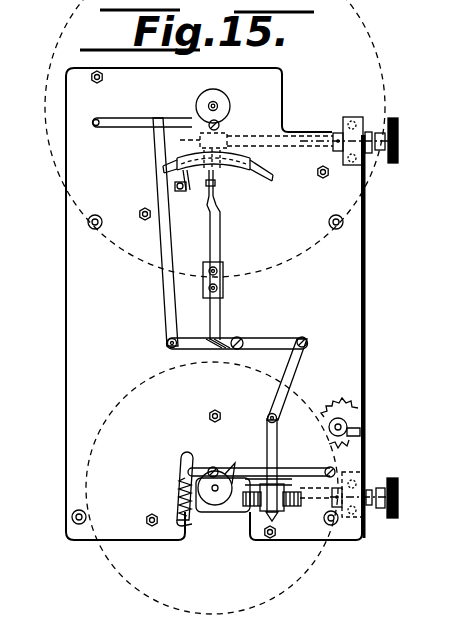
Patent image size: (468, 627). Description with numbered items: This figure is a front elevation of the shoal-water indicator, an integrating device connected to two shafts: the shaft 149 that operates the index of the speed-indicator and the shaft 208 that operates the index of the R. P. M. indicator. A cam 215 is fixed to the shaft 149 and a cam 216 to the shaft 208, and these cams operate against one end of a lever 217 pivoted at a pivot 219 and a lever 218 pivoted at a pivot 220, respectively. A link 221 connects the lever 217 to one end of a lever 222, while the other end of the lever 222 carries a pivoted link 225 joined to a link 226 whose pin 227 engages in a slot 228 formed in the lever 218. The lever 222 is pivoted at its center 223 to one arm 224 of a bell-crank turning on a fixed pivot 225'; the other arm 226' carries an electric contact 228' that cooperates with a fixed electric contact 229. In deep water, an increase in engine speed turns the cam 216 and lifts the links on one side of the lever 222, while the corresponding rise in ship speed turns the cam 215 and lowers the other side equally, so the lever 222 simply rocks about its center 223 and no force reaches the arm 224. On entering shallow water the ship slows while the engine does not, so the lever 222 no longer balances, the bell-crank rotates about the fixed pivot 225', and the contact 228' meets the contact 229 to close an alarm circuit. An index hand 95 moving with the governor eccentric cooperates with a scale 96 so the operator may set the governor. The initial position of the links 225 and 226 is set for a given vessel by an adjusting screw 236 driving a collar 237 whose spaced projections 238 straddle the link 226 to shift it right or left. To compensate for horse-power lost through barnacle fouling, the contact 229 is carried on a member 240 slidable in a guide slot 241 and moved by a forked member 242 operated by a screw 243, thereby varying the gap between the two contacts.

The index hand 95 is at (349, 414).
The scale 96 is at (361, 432).
The shaft 149 is at (220, 105).
The shaft 208 is at (213, 493).
The cam 215 is at (198, 104).
The cam 216 is at (225, 502).
The lever 217 is at (133, 121).
The lever 218 is at (304, 475).
The pivot 219 is at (95, 128).
The pivot 220 is at (332, 470).
The link 221 is at (161, 241).
The lever 222 is at (165, 347).
The pivot 223 is at (238, 350).
The bell-crank arm 224 is at (250, 338).
The link 225 is at (305, 378).
The fixed pivot 225' is at (234, 305).
The link 226 is at (294, 424).
The bell-crank arm 226' is at (239, 268).
The pin 227 is at (266, 428).
The slot 228 is at (209, 478).
The electric contact 228' is at (236, 186).
The fixed electric contact 229 is at (186, 192).
The adjusting screw 236 is at (398, 483).
The collar 237 is at (261, 526).
The spaced projections 238 is at (281, 508).
The member 240 is at (251, 157).
The guide slot 241 is at (273, 178).
The forked member 242 is at (228, 133).
The screw 243 is at (394, 118).